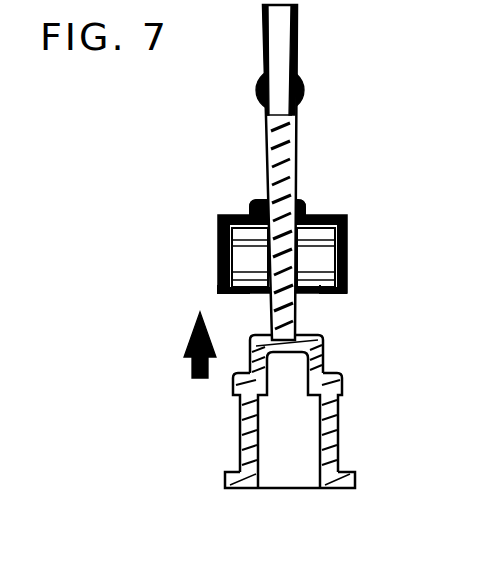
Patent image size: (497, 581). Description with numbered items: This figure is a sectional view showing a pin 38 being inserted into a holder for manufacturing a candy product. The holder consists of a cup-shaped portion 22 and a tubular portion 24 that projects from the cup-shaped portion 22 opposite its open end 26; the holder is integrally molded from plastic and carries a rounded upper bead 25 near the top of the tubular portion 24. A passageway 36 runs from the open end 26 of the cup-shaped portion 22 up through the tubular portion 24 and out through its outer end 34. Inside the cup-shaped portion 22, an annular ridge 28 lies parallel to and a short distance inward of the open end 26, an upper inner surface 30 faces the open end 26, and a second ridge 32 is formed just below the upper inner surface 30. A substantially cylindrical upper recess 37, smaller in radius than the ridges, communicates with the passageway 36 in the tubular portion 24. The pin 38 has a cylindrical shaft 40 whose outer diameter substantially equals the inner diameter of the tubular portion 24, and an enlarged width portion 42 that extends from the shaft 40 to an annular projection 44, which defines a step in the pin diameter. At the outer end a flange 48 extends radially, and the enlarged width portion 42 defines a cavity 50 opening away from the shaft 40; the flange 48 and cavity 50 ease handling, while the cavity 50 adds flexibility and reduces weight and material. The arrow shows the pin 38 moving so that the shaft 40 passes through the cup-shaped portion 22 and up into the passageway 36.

The cup-shaped portion 22 is at (350, 245).
The tubular portion 24 is at (343, 172).
The rounded upper bead 25 is at (258, 92).
The open end 26 is at (326, 293).
The annular ridge 28 is at (245, 293).
The upper inner surface 30 is at (232, 255).
The second ridge 32 is at (350, 262).
The outer end 34 is at (300, 4).
The passageway 36 is at (300, 50).
The upper recess 37 is at (252, 212).
The pin 38 is at (294, 440).
The shaft 40 is at (300, 173).
The enlarged width portion 42 is at (240, 418).
The annular projection 44 is at (352, 368).
The flange 48 is at (350, 468).
The cavity 50 is at (283, 468).